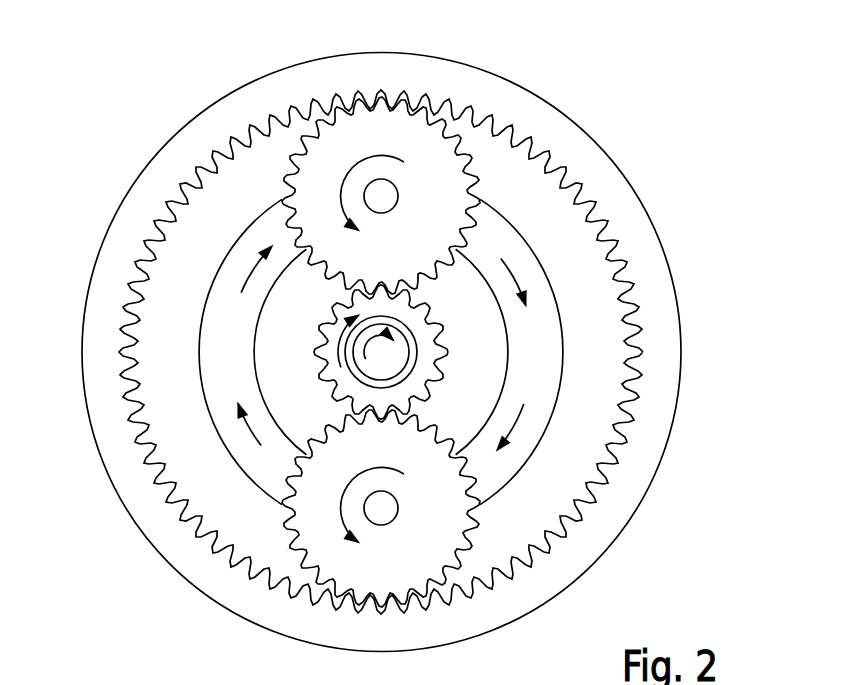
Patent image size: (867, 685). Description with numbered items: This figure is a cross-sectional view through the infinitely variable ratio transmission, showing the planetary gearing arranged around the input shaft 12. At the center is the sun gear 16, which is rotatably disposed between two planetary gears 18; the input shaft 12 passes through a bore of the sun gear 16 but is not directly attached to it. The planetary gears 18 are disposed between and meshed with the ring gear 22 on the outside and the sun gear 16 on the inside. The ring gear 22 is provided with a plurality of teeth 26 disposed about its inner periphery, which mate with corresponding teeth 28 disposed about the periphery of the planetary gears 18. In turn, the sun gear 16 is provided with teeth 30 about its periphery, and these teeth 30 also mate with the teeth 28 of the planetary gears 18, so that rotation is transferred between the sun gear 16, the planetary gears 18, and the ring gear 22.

The input shaft 12 is at (390, 360).
The sun gear 16 is at (412, 320).
The planetary gear 18 is at (343, 148).
The ring gear 22 is at (203, 130).
The teeth 26 is at (200, 183).
The teeth 28 is at (433, 115).
The teeth 30 is at (327, 372).